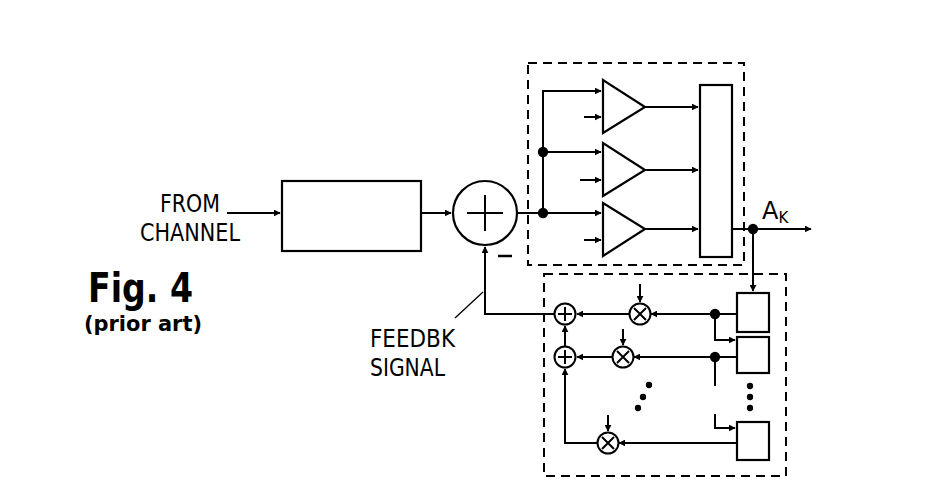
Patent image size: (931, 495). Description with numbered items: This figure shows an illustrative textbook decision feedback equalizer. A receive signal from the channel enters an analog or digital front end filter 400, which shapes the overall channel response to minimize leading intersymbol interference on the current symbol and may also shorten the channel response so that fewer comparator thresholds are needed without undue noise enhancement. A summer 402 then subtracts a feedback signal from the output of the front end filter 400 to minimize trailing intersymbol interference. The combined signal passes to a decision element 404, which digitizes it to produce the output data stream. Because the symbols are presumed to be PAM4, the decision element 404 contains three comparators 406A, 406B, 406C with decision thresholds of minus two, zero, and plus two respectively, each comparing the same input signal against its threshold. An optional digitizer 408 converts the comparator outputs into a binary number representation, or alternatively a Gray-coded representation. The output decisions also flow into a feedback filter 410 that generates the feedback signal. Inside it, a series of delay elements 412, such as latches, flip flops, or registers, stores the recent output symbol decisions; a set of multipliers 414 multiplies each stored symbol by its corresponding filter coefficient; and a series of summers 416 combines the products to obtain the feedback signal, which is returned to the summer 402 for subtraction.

The front end filter 400 is at (335, 251).
The summer 402 is at (468, 241).
The decision element 404 is at (612, 166).
The comparator 406A is at (632, 219).
The comparator 406B is at (632, 161).
The comparator 406C is at (632, 97).
The digitizer 408 is at (700, 241).
The feedback filter 410 is at (667, 377).
The delay elements 412 is at (769, 313).
The multipliers 414 is at (646, 323).
The summers 416 is at (553, 355).